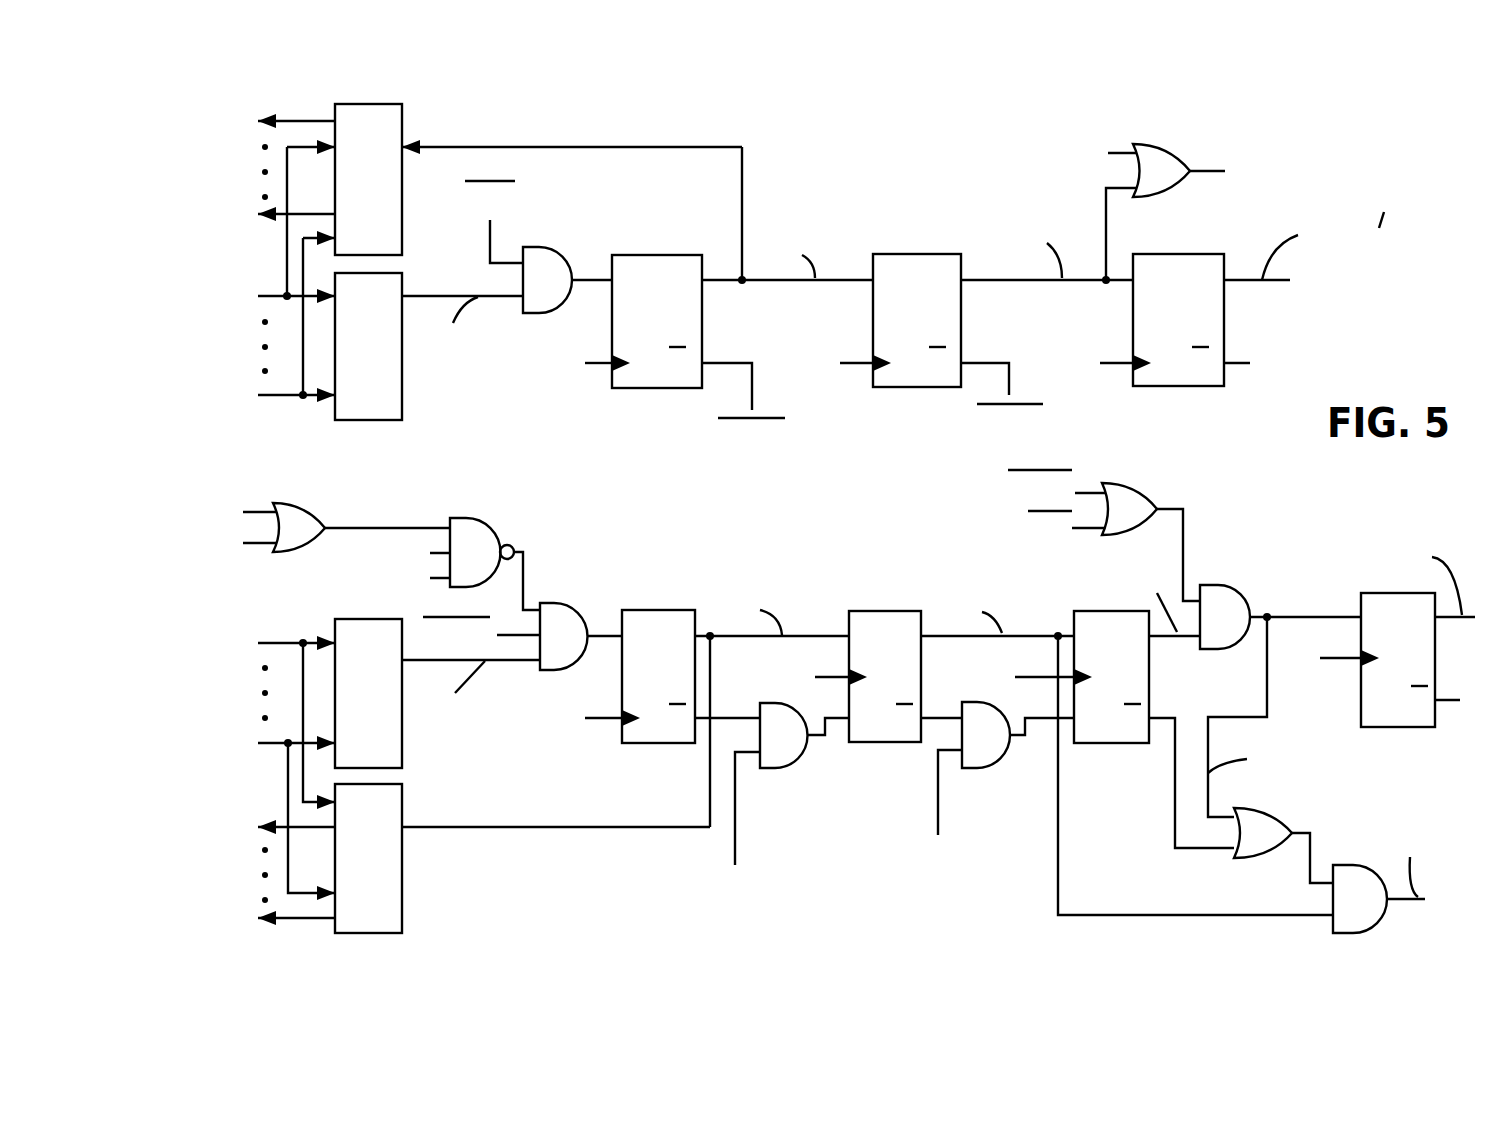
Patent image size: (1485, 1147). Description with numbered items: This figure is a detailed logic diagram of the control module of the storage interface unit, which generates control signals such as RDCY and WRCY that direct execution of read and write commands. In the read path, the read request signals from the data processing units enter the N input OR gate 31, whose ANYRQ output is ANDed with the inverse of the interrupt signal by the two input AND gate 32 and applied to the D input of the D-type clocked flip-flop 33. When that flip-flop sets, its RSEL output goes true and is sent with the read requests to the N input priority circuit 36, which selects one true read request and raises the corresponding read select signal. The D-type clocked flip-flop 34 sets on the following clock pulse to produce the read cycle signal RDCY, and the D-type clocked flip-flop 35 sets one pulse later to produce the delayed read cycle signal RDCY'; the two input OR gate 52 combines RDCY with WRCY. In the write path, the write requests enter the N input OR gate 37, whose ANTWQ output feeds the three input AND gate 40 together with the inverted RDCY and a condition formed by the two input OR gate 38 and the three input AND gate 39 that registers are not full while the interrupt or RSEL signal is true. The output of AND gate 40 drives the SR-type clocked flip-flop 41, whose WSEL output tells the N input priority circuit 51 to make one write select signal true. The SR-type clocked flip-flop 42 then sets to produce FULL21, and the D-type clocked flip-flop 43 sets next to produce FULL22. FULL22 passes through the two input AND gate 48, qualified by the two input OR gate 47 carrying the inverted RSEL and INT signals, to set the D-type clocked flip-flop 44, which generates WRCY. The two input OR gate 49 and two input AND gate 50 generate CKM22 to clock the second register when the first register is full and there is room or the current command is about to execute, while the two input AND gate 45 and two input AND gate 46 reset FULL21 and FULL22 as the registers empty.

The N input OR gate 31 is at (402, 373).
The two input AND gate 32 is at (542, 245).
The D-type clocked flip-flop 33 is at (652, 388).
The D-type clocked flip-flop 34 is at (919, 254).
The D-type clocked flip-flop 35 is at (1185, 254).
The N input priority circuit 36 is at (402, 124).
The N input OR gate 37 is at (402, 740).
The two input OR gate 38 is at (303, 503).
The three input AND gate 39 is at (480, 518).
The three input AND gate 40 is at (573, 603).
The SR-type clocked flip-flop 41 is at (665, 743).
The SR-type clocked flip-flop 42 is at (880, 611).
The D-type clocked flip-flop 43 is at (1115, 743).
The D-type clocked flip-flop 44 is at (1382, 593).
The two input AND gate 45 is at (775, 768).
The two input AND gate 46 is at (997, 760).
The two input OR gate 47 is at (1133, 487).
The two input AND gate 48 is at (1233, 585).
The two input OR gate 49 is at (1280, 852).
The two input AND gate 50 is at (1382, 917).
The N input priority circuit 51 is at (402, 882).
The two input OR gate 52 is at (1163, 145).